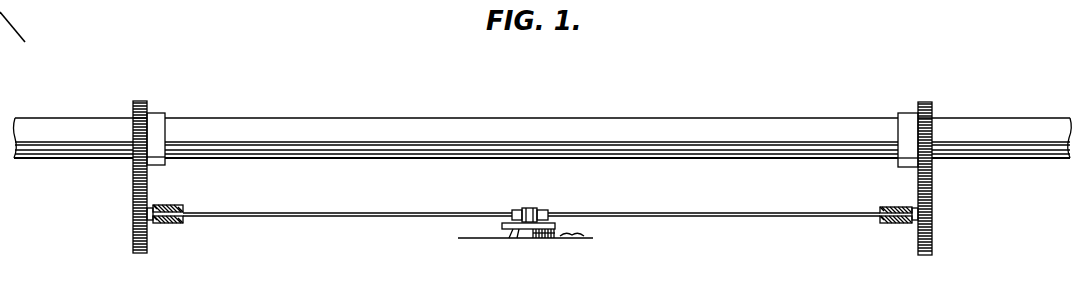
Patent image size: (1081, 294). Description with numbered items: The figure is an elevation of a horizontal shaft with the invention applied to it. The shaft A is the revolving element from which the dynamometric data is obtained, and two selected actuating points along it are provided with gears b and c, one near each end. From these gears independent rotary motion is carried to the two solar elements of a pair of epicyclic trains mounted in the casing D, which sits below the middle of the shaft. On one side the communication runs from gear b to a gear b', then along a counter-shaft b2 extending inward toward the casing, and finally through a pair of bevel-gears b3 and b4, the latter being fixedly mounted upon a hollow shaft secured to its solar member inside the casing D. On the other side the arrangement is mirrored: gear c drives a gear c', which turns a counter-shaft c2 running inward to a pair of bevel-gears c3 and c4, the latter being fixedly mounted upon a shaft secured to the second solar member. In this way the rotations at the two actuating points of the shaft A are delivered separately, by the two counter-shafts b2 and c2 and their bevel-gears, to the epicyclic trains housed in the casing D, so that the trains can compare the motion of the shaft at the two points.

The shaft A is at (527, 129).
The gear b is at (137, 164).
The gear b' is at (143, 213).
The counter-shaft b2 is at (364, 222).
The bevel-gear b3 is at (518, 210).
The bevel-gear b4 is at (535, 231).
The gear c is at (925, 166).
The gear c' is at (923, 215).
The counter-shaft c2 is at (738, 221).
The bevel-gear c3 is at (541, 215).
The bevel-gear c4 is at (535, 206).
The casing D is at (517, 233).